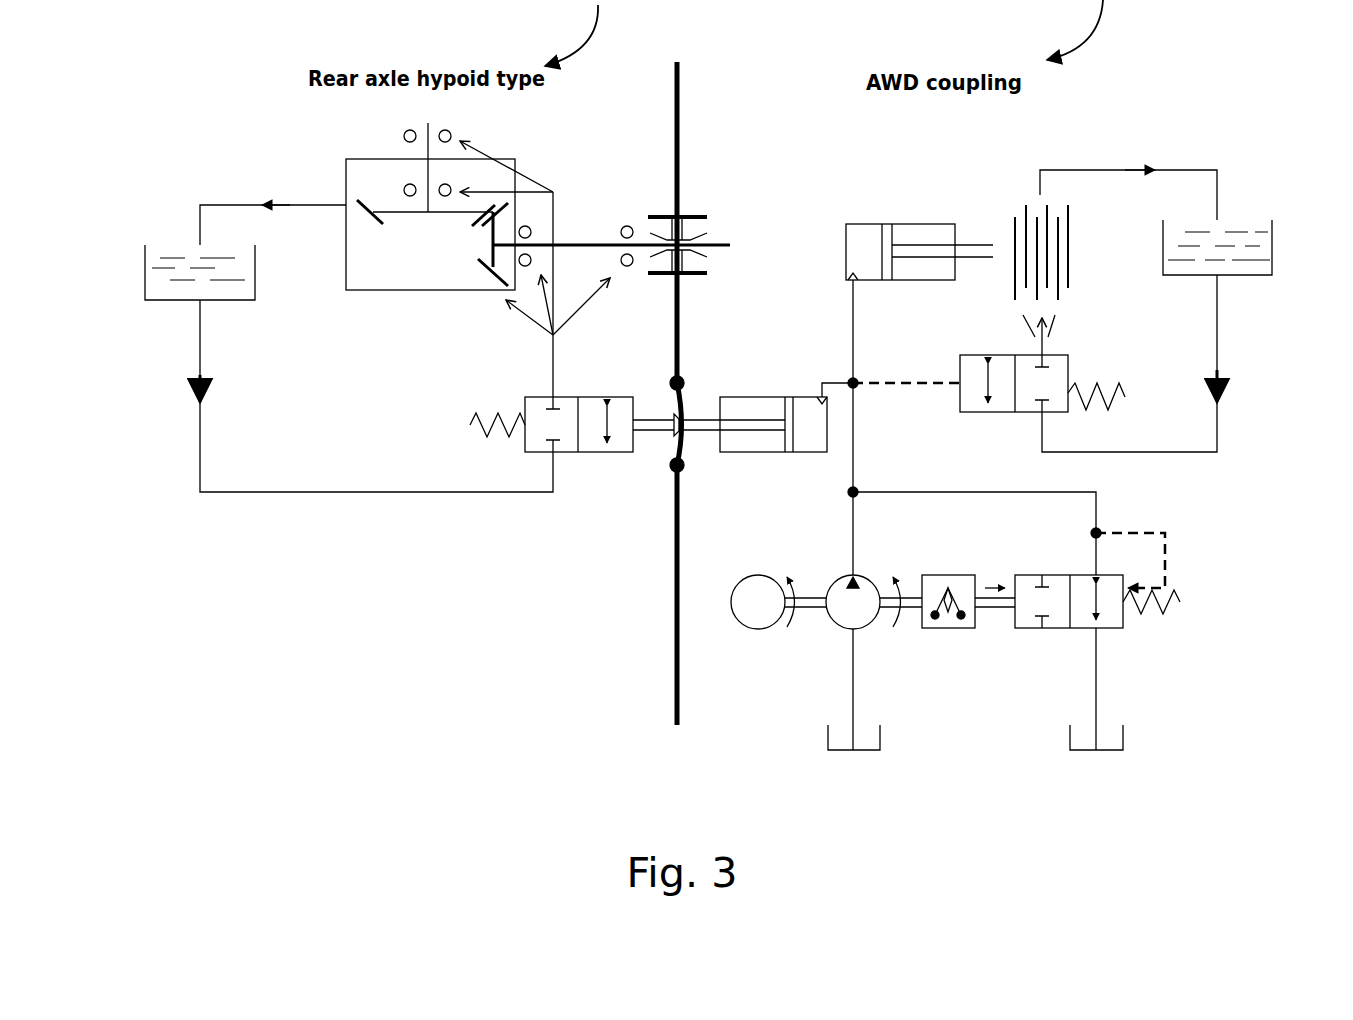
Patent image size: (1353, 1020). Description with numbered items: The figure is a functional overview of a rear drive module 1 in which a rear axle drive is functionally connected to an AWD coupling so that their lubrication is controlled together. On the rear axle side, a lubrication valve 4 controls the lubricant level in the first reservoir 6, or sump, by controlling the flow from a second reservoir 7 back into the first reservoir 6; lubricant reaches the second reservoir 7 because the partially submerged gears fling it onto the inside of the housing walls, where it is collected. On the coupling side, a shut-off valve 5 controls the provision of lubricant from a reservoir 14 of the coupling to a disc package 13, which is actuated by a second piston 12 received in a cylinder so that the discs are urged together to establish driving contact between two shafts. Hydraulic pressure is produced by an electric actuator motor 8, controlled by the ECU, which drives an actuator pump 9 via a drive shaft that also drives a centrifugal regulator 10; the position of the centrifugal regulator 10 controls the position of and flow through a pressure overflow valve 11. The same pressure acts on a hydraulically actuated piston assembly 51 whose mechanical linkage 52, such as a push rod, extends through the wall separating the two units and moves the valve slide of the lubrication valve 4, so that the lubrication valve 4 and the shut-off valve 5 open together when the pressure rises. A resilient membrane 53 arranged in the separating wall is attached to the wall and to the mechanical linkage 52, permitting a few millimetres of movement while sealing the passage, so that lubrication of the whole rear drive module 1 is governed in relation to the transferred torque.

The rear drive module 1 is at (468, 760).
The lubrication valve 4 is at (628, 452).
The shut-off valve 5 is at (1020, 412).
The first reservoir 6 is at (405, 292).
The second reservoir 7 is at (178, 305).
The electric actuator motor 8 is at (765, 630).
The actuator pump 9 is at (848, 630).
The centrifugal regulator 10 is at (957, 628).
The pressure overflow valve 11 is at (1062, 628).
The second piston 12 is at (917, 283).
The disc package 13 is at (1047, 208).
The reservoir 14 is at (1242, 227).
The hydraulically actuated piston assembly 51 is at (766, 452).
The mechanical linkage 52 is at (704, 420).
The resilient membrane 53 is at (675, 447).